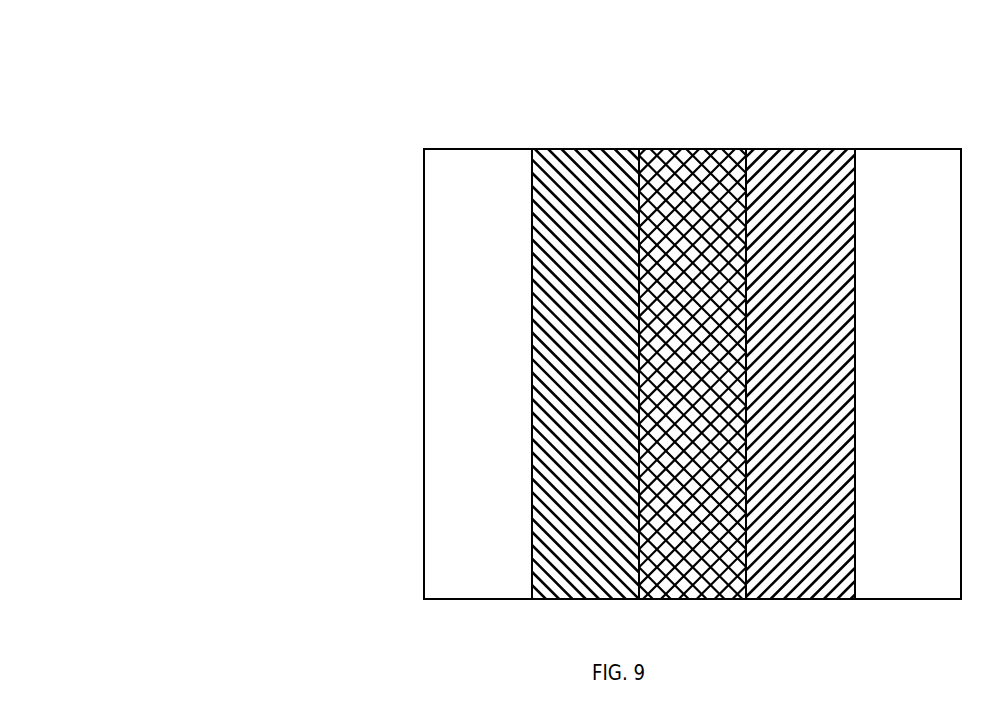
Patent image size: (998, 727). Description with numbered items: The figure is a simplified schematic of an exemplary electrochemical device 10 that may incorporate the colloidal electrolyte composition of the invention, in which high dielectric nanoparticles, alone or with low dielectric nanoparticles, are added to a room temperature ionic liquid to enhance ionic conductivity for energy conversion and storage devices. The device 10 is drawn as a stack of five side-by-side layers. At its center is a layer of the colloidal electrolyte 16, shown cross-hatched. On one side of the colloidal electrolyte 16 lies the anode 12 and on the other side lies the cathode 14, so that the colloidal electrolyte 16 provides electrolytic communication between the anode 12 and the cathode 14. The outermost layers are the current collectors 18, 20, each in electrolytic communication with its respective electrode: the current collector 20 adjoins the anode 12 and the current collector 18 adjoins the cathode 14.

The electrochemical device 10 is at (350, 207).
The anode 12 is at (585, 147).
The cathode 14 is at (815, 147).
The colloidal electrolyte 16 is at (693, 147).
The current collector 18 is at (910, 147).
The current collector 20 is at (475, 147).